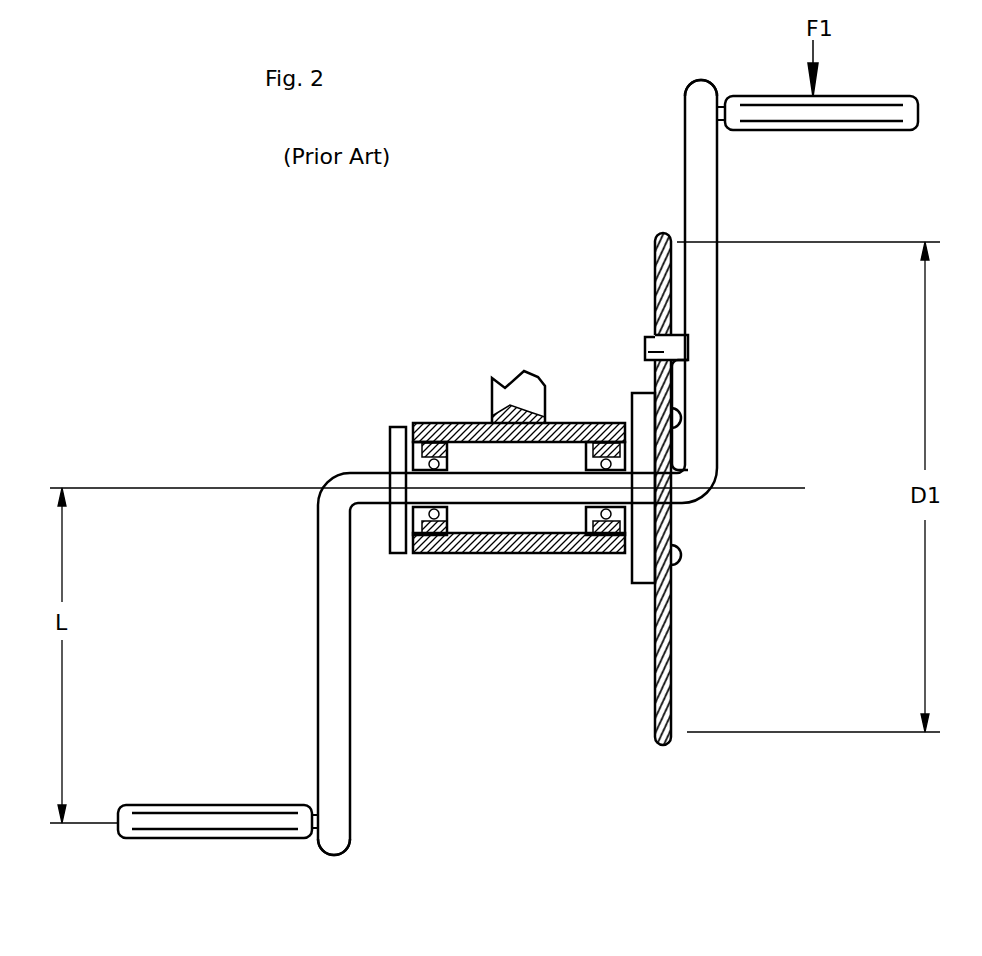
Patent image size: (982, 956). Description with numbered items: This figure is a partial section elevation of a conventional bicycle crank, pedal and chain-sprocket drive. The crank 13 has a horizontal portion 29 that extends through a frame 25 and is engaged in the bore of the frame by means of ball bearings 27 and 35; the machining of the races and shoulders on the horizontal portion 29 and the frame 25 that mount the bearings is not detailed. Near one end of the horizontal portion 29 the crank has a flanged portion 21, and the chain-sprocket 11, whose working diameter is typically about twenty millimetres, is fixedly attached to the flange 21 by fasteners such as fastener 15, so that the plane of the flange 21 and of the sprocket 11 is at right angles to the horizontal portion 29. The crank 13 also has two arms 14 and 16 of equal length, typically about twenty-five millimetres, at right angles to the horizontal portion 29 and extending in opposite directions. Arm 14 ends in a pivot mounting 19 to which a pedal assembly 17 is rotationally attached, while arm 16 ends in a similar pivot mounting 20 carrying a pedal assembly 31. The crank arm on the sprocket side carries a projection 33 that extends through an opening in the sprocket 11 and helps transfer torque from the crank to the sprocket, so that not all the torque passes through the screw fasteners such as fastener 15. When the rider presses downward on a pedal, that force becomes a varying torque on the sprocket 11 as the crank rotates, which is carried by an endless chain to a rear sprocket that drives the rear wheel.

The chain-sprocket 11 is at (655, 298).
The crank 13 is at (698, 122).
The crank arm 14 is at (702, 348).
The fastener 15 is at (683, 423).
The crank arm 16 is at (322, 583).
The pedal assembly 17 is at (835, 112).
The pivot mounting 19 is at (723, 100).
The pivot mounting 20 is at (313, 832).
The flanged portion 21 is at (642, 587).
The frame 25 is at (462, 423).
The ball bearing 27 is at (603, 557).
The horizontal portion 29 is at (518, 495).
The pedal assembly 31 is at (253, 818).
The projection 33 is at (655, 350).
The ball bearing 35 is at (417, 423).